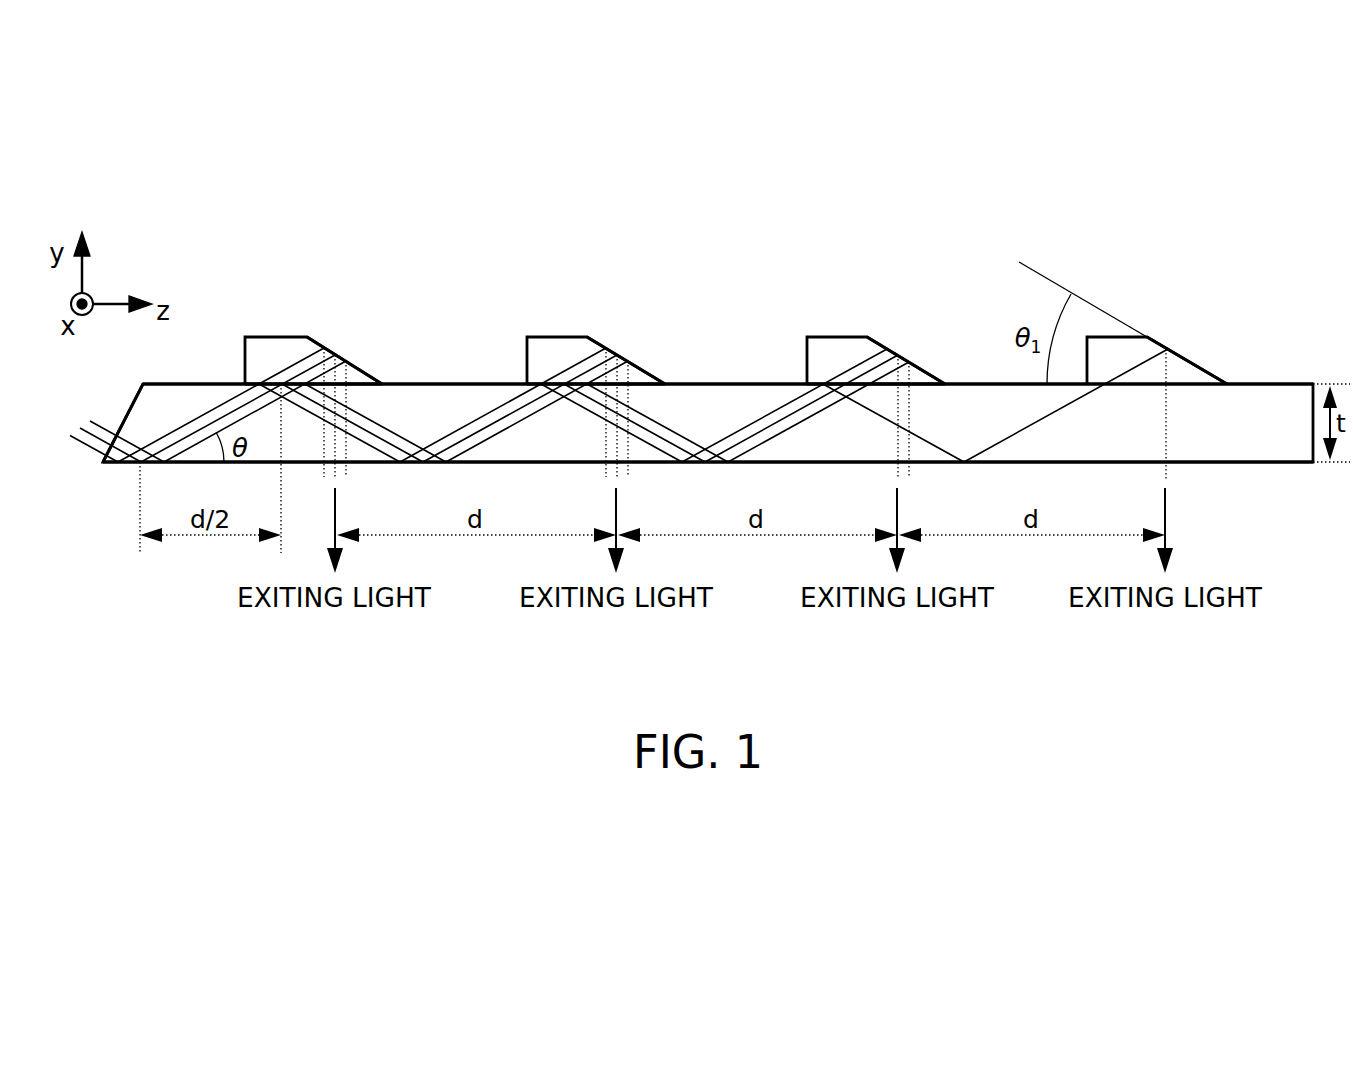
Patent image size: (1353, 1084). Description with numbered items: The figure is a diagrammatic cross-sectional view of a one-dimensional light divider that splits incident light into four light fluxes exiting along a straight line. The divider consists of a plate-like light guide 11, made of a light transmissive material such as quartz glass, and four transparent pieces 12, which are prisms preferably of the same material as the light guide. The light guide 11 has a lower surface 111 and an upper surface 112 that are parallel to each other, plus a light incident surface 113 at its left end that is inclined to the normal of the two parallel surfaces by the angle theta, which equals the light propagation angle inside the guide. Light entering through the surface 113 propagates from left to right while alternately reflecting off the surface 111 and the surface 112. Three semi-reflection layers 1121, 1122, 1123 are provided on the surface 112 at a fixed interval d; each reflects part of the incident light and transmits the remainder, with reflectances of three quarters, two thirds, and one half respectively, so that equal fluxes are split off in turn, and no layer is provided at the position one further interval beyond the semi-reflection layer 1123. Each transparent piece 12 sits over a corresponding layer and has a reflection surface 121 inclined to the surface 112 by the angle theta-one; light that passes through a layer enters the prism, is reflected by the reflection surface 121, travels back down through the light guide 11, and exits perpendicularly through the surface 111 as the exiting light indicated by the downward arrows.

The light guide 11 is at (988, 407).
The transparent piece 12 is at (267, 343).
The surface 111 is at (810, 465).
The surface 112 is at (727, 383).
The light incident surface 113 is at (127, 410).
The reflection surface 121 is at (340, 353).
The semi-reflection layer 1121 is at (293, 378).
The semi-reflection layer 1122 is at (572, 380).
The semi-reflection layer 1123 is at (853, 380).